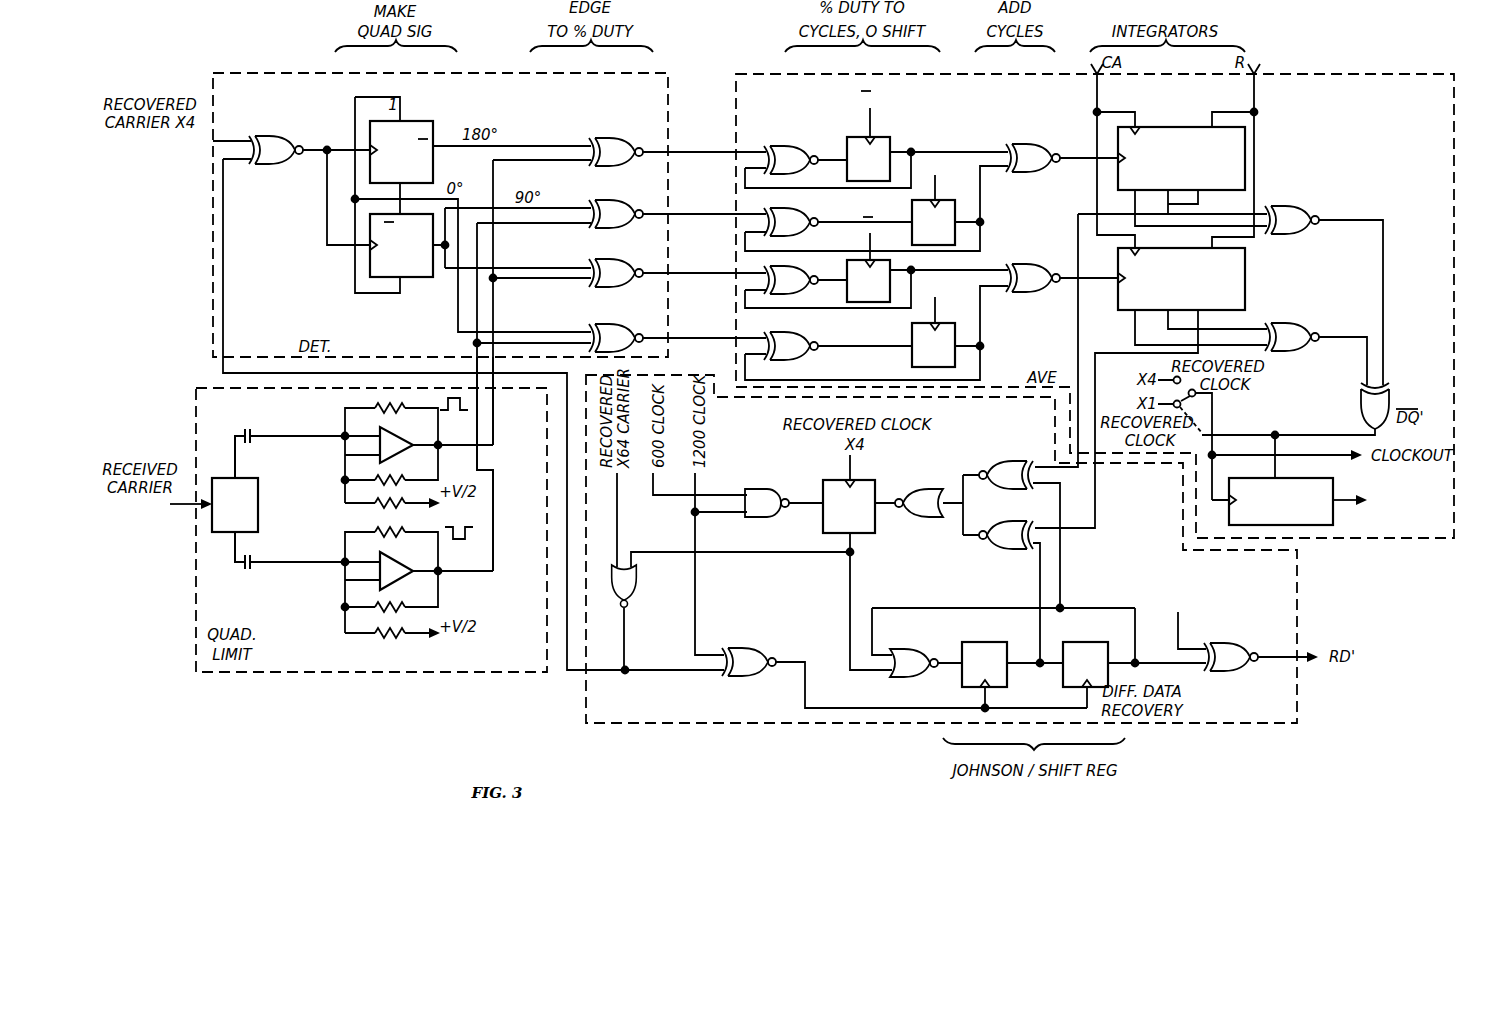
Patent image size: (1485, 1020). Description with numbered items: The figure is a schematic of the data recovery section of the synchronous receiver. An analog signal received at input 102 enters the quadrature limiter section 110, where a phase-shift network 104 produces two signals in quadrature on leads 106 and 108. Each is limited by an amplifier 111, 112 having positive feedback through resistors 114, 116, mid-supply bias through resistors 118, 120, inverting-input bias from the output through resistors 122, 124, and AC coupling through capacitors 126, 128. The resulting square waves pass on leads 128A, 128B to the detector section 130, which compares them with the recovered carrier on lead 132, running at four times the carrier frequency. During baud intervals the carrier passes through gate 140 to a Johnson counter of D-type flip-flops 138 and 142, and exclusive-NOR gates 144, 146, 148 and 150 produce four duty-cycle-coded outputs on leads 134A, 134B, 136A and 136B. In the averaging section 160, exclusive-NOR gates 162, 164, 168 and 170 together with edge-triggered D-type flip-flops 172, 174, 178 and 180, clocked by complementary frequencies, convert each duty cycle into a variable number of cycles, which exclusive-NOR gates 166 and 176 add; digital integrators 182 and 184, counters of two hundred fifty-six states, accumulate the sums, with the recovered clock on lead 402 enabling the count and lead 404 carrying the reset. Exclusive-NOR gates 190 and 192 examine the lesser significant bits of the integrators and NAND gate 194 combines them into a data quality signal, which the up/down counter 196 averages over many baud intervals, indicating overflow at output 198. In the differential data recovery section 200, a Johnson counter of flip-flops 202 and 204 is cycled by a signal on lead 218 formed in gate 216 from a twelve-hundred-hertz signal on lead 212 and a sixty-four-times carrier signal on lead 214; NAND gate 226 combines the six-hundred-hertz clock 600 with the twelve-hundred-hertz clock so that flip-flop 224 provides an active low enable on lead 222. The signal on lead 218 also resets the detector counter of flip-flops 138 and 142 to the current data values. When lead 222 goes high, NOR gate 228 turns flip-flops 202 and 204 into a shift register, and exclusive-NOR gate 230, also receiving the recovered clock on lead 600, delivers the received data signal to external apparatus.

The analog signal input 102 is at (181, 516).
The phase-shift network 104 is at (258, 490).
The quadrature signal lead 106 is at (240, 428).
The quadrature signal lead 108 is at (234, 578).
The quadrature limiter section 110 is at (350, 672).
The limiter amplifier 111 is at (390, 434).
The limiter amplifier 112 is at (392, 562).
The positive feedback resistor 114 is at (389, 480).
The positive feedback resistor 116 is at (389, 610).
The bias resistor 118 is at (368, 513).
The bias resistor 120 is at (388, 641).
The inverting input bias resistor 122 is at (370, 409).
The inverting input bias resistor 124 is at (368, 534).
The coupling capacitor 126 is at (252, 430).
The coupling capacitor 128 is at (252, 563).
The limited signal lead 128A is at (472, 390).
The limited signal lead 128B is at (485, 421).
The detector section 130 is at (211, 294).
The recovered carrier lead 132 is at (212, 147).
The detector output lead 134A is at (676, 154).
The detector output lead 134B is at (676, 216).
The detector output lead 136A is at (676, 275).
The detector output lead 136B is at (676, 340).
The D-type flip-flop 138 is at (409, 121).
The gate 140 is at (271, 130).
The D-type flip-flop 142 is at (408, 277).
The exclusive-NOR gate 144 is at (635, 146).
The exclusive-NOR gate 146 is at (635, 206).
The exclusive-NOR gate 148 is at (635, 266).
The exclusive-NOR gate 150 is at (635, 328).
The averaging section 160 is at (1448, 540).
The exclusive-NOR gate 162 is at (779, 151).
The exclusive-NOR gate 164 is at (808, 222).
The exclusive-NOR gate 166 is at (1021, 148).
The exclusive-NOR gate 168 is at (791, 272).
The exclusive-NOR gate 170 is at (791, 337).
The D-type flip-flop 172 is at (889, 135).
The D-type flip-flop 174 is at (958, 205).
The exclusive-NOR gate 176 is at (1021, 274).
The D-type flip-flop 178 is at (846, 250).
The D-type flip-flop 180 is at (913, 354).
The digital integrator 182 is at (1151, 127).
The digital integrator 184 is at (1245, 278).
The exclusive-NOR gate 190 is at (1306, 211).
The exclusive-NOR gate 192 is at (1306, 328).
The NAND gate 194 is at (1360, 408).
The up/down counter 196 is at (1330, 489).
The counter overflow output 198 is at (1344, 514).
The differential data recovery section 200 is at (1298, 606).
The flip-flop 202 is at (970, 642).
The flip-flop 204 is at (1070, 642).
The 1200 Hz signal lead 212 is at (703, 593).
The recovered carrier multiple lead 214 is at (621, 476).
The gate 216 is at (634, 598).
The Johnson counter clock lead 218 is at (226, 270).
The enable lead 222 is at (865, 581).
The flip-flop 224 is at (827, 482).
The NAND gate 226 is at (740, 482).
The NOR gate 228 is at (895, 640).
The exclusive-NOR gate 230 is at (1221, 648).
The recovered clock lead 402 is at (1100, 108).
The integrator reset lead 404 is at (1256, 108).
The 600 Hz clock lead 600 is at (1183, 620).